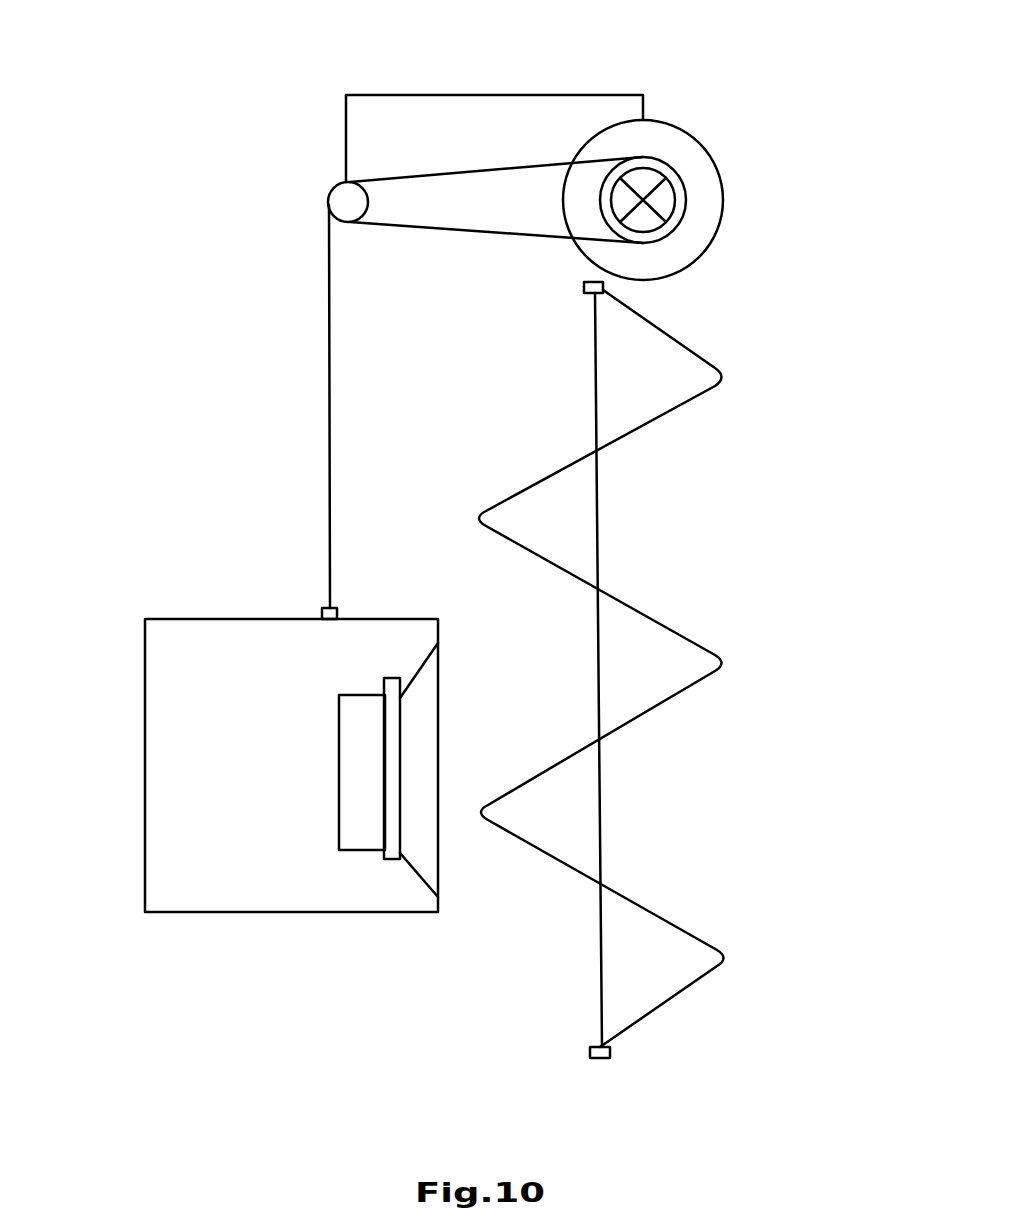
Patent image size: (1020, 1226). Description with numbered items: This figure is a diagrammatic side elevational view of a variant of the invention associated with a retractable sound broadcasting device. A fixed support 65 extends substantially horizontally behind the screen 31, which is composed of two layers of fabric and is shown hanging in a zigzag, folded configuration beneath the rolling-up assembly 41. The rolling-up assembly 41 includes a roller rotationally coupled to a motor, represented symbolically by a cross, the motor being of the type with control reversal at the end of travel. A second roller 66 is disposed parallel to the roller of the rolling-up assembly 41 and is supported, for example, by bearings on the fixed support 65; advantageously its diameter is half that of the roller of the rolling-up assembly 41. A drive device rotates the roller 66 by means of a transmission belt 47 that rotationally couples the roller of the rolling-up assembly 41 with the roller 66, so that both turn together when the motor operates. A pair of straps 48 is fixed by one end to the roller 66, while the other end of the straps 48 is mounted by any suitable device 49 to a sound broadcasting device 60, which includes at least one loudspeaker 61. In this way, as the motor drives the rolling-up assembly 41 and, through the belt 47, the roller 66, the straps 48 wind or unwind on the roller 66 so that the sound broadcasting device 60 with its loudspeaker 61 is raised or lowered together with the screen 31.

The screen 31 is at (650, 418).
The rolling-up assembly 41 is at (726, 167).
The transmission belt 47 is at (455, 233).
The straps 48 is at (329, 475).
The mounting device 49 is at (337, 612).
The sound broadcasting device 60 is at (172, 683).
The loudspeaker 61 is at (364, 832).
The fixed support 65 is at (541, 95).
The roller 66 is at (352, 202).